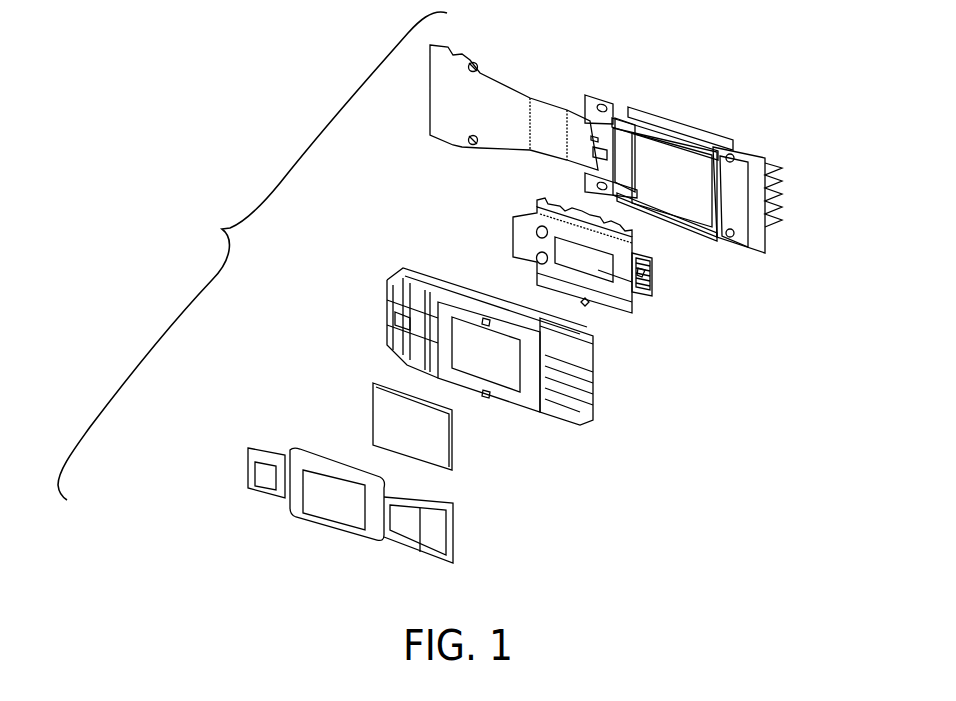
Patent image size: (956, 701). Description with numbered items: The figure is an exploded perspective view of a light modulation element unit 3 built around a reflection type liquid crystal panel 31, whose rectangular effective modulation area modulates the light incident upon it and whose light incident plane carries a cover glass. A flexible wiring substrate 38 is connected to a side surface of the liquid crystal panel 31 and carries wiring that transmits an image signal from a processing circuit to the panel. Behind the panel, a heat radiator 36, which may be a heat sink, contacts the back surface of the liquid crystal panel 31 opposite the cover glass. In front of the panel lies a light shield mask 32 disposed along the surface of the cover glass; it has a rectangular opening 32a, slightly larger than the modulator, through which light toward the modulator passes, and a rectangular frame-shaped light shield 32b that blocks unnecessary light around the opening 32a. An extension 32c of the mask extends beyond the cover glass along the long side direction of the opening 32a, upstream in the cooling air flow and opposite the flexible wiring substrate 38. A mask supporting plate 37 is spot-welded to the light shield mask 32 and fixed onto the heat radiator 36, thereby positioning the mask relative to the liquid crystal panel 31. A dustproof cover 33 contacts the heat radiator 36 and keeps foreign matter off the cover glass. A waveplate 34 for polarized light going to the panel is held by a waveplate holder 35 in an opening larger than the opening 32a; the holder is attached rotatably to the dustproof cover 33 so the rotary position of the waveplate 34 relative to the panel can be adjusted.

The light modulation element unit 3 is at (252, 256).
The reflection type liquid crystal panel 31 is at (655, 162).
The light shield mask 32 is at (528, 250).
The opening 32a is at (615, 276).
The light shield 32b is at (617, 253).
The extension 32c is at (648, 287).
The dustproof cover 33 is at (592, 400).
The waveplate 34 is at (452, 443).
The waveplate holder 35 is at (453, 540).
The heat radiator 36 is at (725, 193).
The mask supporting plate 37 is at (540, 208).
The flexible wiring substrate 38 is at (505, 92).